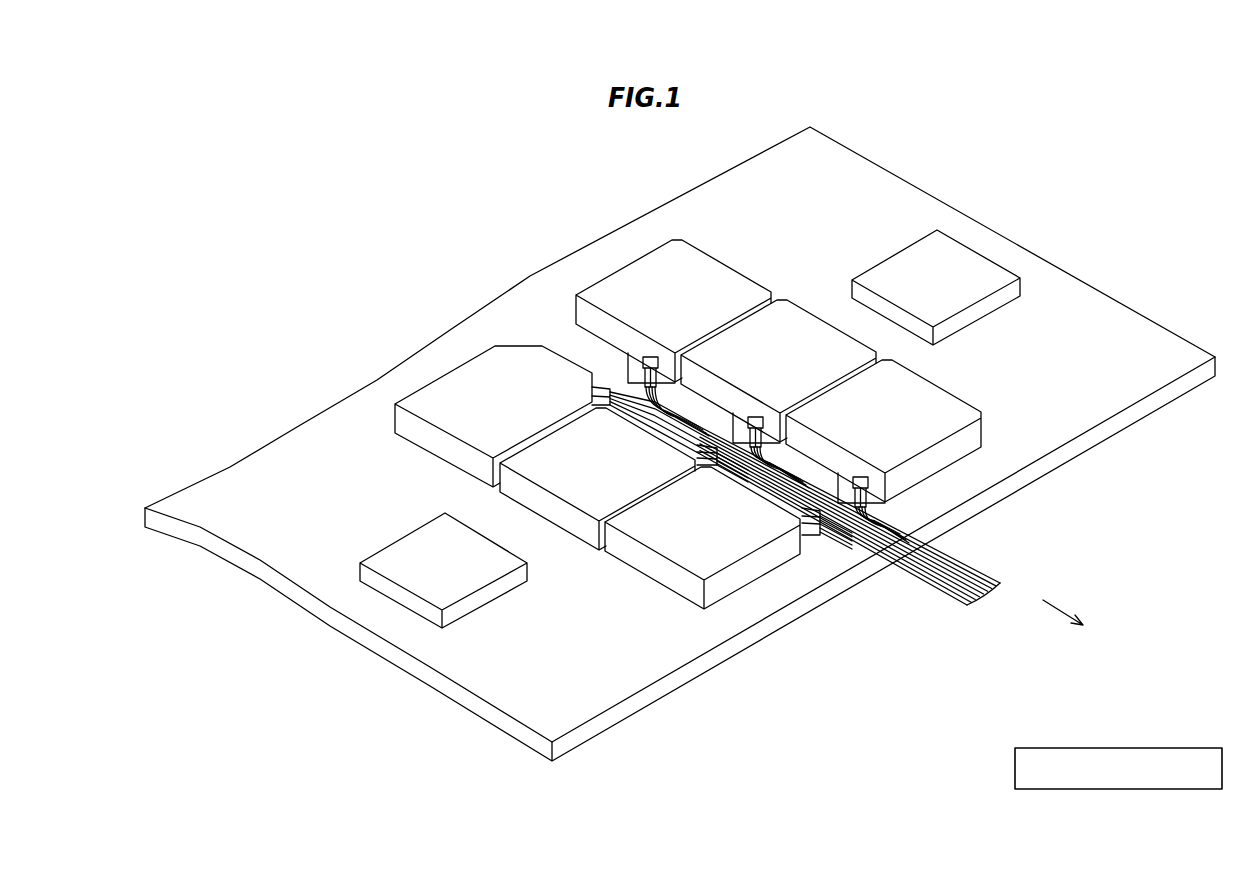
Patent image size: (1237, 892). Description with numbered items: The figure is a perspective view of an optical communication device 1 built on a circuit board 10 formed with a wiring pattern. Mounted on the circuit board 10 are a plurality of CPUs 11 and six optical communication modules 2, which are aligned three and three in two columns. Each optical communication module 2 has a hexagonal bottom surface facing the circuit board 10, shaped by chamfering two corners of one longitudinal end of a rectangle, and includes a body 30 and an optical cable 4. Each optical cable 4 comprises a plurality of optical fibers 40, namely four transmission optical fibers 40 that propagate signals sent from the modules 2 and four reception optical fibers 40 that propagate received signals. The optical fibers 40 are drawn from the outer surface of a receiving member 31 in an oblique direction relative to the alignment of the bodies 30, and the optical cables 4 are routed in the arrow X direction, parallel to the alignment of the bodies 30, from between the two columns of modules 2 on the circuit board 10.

The optical communication device 1 is at (858, 118).
The optical communication module 2 is at (936, 657).
The optical cable 4 is at (1005, 568).
The circuit board 10 is at (1041, 466).
The CPU 11 is at (407, 573).
The body 30 is at (786, 572).
The receiving member 31 is at (797, 332).
The optical fiber 40 is at (912, 556).